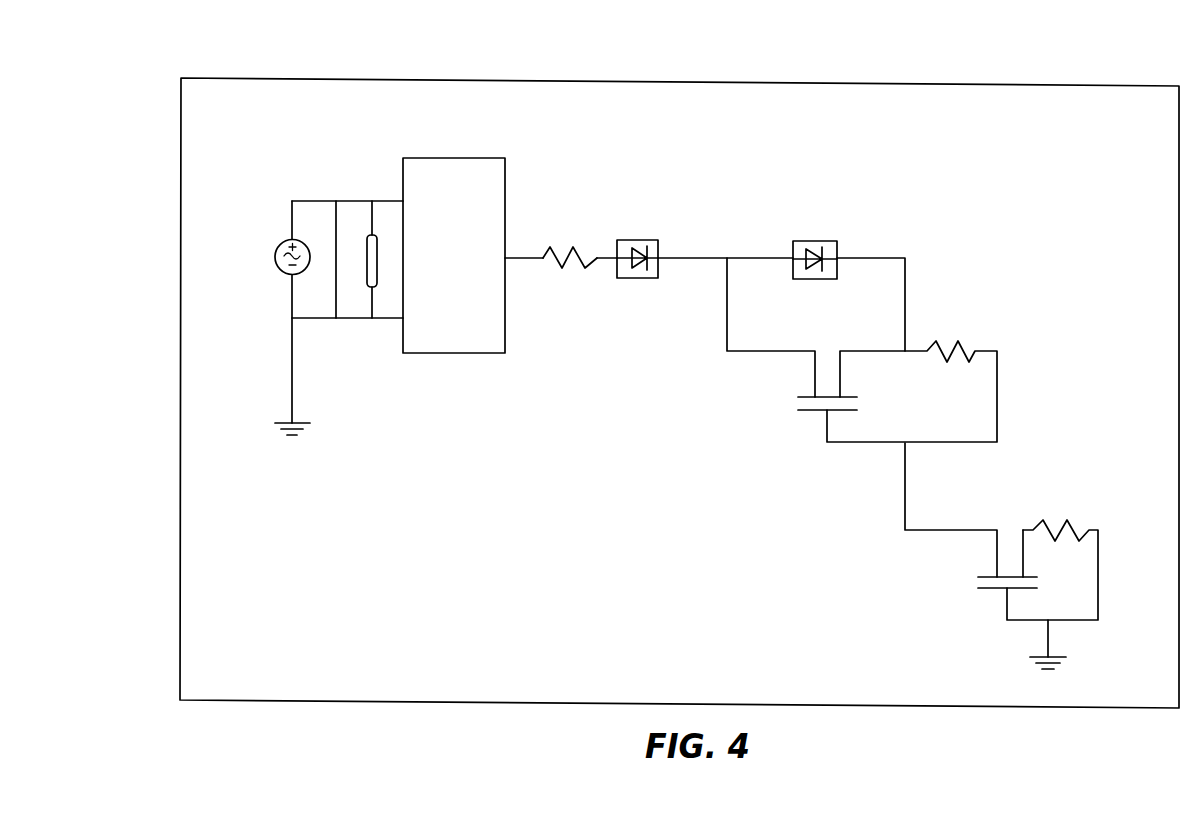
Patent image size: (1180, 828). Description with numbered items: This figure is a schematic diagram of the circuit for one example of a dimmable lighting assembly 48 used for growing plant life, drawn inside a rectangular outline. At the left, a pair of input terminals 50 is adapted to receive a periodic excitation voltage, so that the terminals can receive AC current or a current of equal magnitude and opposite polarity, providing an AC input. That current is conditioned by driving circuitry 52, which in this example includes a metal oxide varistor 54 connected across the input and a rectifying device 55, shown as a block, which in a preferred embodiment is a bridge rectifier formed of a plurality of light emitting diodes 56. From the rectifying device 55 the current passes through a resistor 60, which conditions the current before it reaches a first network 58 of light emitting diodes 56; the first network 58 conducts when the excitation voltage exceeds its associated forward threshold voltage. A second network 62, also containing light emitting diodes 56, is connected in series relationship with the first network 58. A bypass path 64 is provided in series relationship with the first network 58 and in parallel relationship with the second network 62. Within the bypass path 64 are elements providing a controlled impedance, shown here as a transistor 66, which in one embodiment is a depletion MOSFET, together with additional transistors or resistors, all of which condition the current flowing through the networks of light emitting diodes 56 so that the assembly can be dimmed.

The circuit board / housing outline 48 is at (294, 78).
The input terminals 50 is at (339, 318).
The driving circuitry 52 is at (682, 434).
The metal oxide varistor 54 is at (372, 252).
The rectifying device 55 is at (453, 158).
The light emitting diode 56 is at (640, 246).
The first network 58 is at (623, 240).
The resistor 60 is at (549, 247).
The second network 62 is at (797, 242).
The bypass path 64 is at (962, 267).
The transistor 66 is at (850, 396).